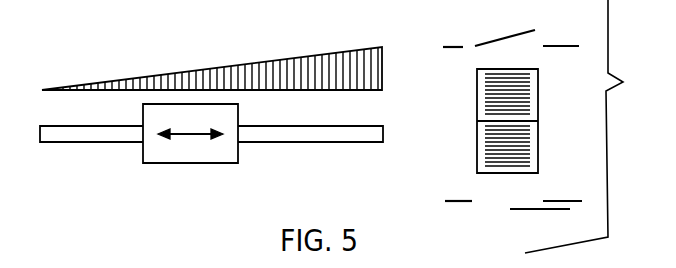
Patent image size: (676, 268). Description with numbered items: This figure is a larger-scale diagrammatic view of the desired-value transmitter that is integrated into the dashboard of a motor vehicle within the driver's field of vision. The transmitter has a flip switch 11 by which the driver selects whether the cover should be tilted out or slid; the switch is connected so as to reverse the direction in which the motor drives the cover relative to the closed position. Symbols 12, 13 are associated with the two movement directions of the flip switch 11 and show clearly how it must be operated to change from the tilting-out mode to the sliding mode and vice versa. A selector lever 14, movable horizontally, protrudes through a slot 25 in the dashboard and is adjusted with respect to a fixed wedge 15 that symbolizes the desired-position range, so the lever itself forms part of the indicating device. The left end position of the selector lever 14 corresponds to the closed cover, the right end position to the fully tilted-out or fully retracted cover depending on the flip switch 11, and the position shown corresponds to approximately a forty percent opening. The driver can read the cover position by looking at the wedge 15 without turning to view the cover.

The flip switch 11 is at (540, 90).
The symbol 12 is at (547, 34).
The symbol 13 is at (491, 207).
The selector lever 14 is at (189, 150).
The wedge 15 is at (283, 68).
The slot 25 is at (305, 133).